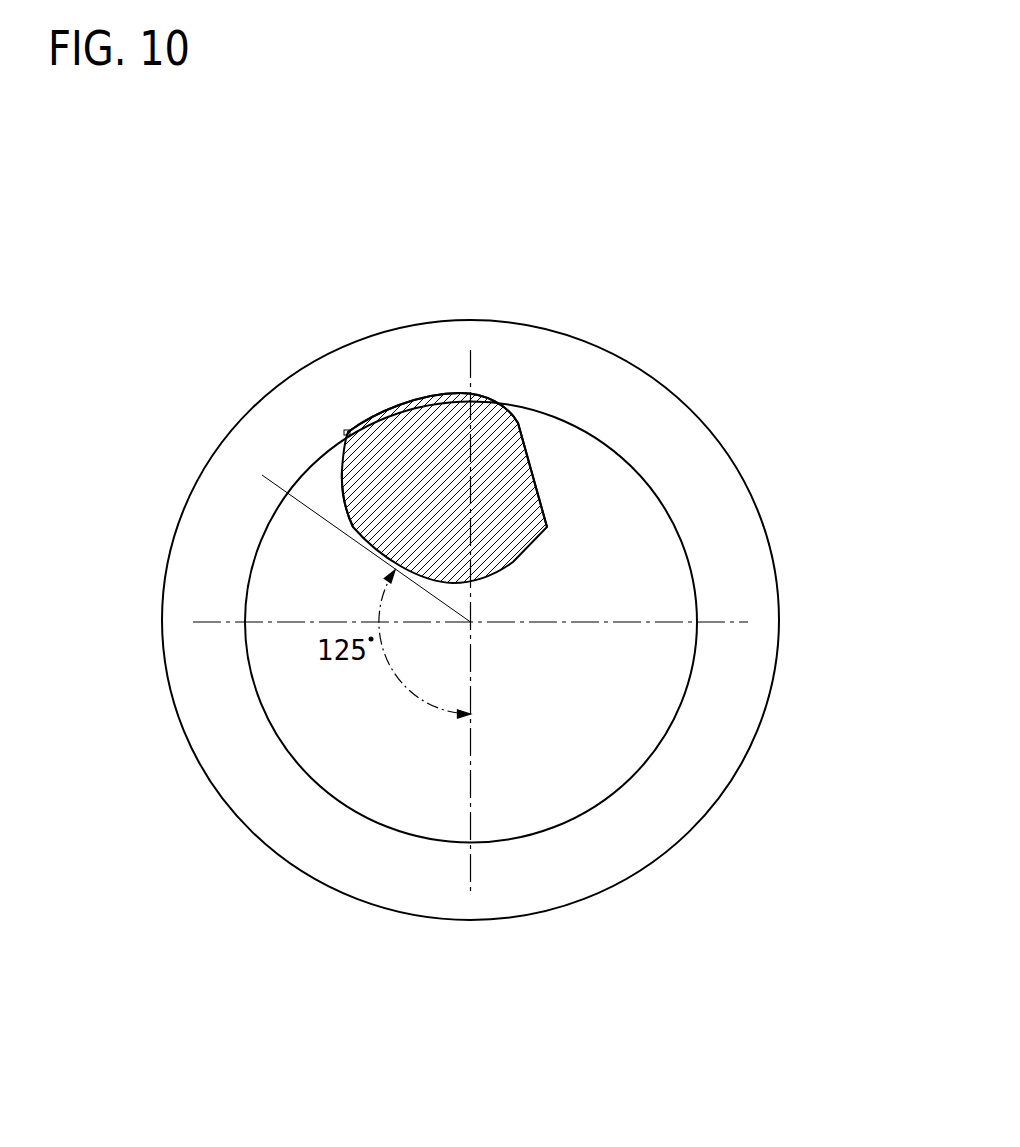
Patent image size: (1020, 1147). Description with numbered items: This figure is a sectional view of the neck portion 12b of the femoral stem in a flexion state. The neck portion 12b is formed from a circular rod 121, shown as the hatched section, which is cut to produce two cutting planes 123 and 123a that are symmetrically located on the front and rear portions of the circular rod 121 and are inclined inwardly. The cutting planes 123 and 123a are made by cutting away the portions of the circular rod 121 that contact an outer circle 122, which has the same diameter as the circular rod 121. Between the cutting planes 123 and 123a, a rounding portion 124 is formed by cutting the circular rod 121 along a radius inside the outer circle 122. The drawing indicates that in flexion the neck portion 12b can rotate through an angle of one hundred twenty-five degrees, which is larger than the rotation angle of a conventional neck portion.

The neck portion 12b is at (848, 447).
The circular rod 121 is at (513, 550).
The outer circle 122 is at (350, 522).
The cutting plane 123 is at (530, 463).
The cutting plane 123a is at (400, 413).
The rounding portion 124 is at (487, 398).